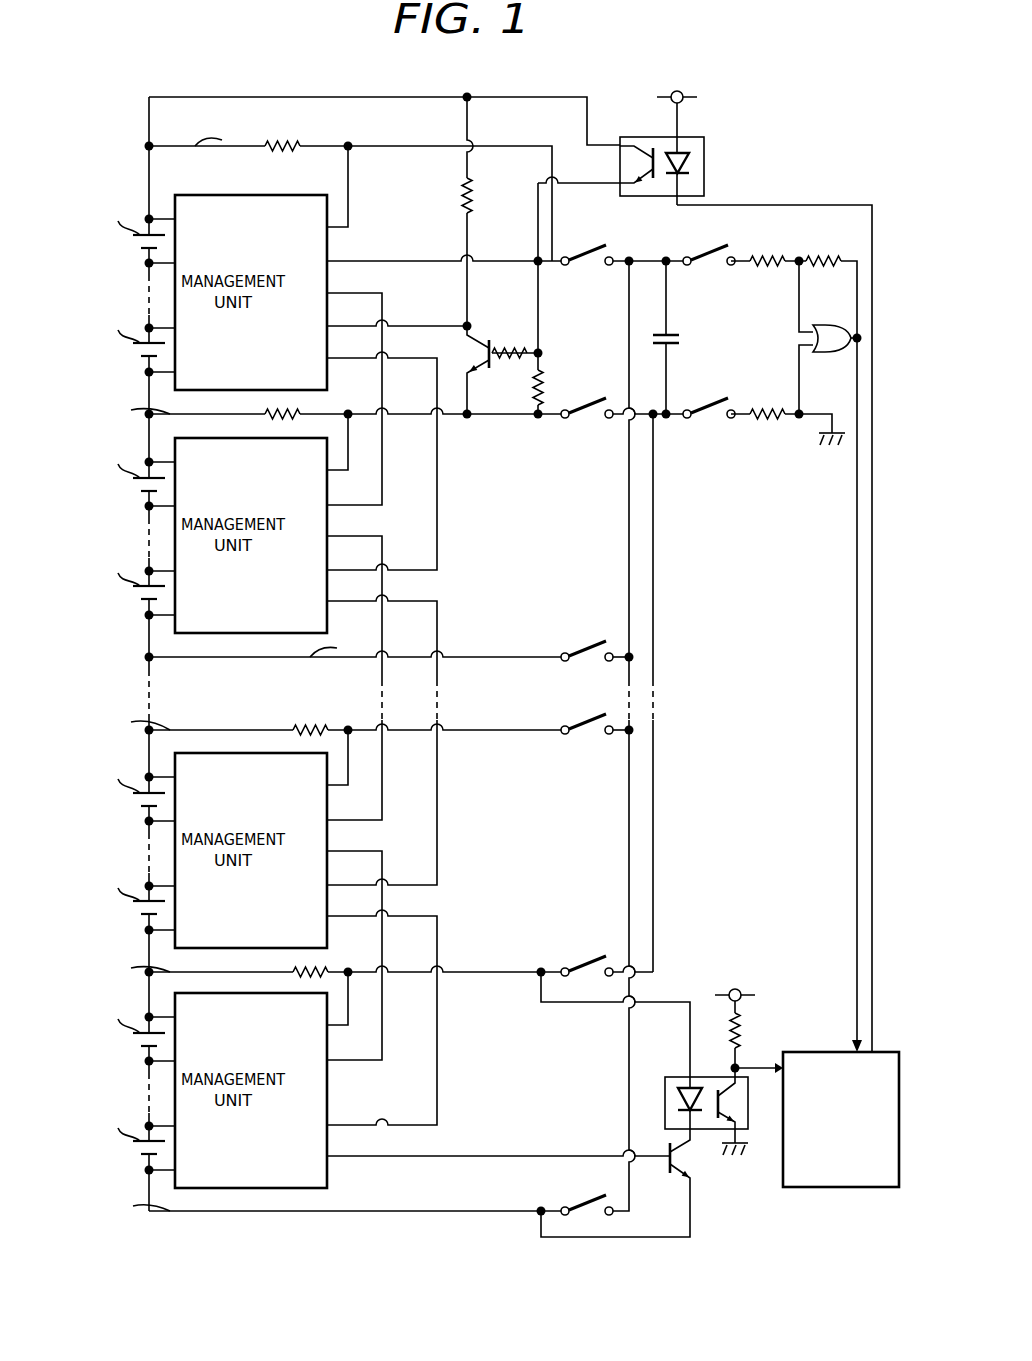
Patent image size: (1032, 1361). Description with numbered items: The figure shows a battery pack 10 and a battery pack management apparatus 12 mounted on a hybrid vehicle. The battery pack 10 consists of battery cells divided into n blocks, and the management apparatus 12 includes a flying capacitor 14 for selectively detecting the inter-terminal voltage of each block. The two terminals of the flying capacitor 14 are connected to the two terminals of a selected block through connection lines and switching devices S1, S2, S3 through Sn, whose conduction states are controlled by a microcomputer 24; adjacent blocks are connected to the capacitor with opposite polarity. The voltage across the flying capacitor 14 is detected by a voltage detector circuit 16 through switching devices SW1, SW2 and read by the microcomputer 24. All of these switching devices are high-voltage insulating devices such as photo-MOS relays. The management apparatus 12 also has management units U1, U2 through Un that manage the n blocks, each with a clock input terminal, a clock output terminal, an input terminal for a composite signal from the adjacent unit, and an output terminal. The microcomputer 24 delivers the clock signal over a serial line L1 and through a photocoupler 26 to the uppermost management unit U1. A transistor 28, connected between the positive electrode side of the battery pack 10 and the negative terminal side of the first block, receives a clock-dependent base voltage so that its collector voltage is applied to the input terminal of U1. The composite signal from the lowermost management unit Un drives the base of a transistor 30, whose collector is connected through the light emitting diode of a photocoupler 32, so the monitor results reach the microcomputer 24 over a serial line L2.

The battery pack 10 is at (108, 132).
The battery pack management apparatus 12 is at (804, 122).
The flying capacitor 14 is at (682, 334).
The voltage detector circuit 16 is at (770, 442).
The microcomputer 24 is at (813, 1051).
The photocoupler 26 is at (700, 136).
The transistor 28 is at (470, 336).
The transistor 30 is at (674, 1180).
The photocoupler 32 is at (720, 1130).
The management unit U1 is at (278, 195).
The management unit U2 is at (330, 414).
The management unit Un is at (310, 996).
The switching device S1 is at (590, 270).
The switching device S2 is at (594, 401).
The switching device S3 is at (590, 646).
The switching device Sn is at (590, 958).
The switching device SW1 is at (706, 268).
The switching device SW2 is at (707, 402).
The serial line L1 is at (873, 515).
The serial line L2 is at (752, 1066).